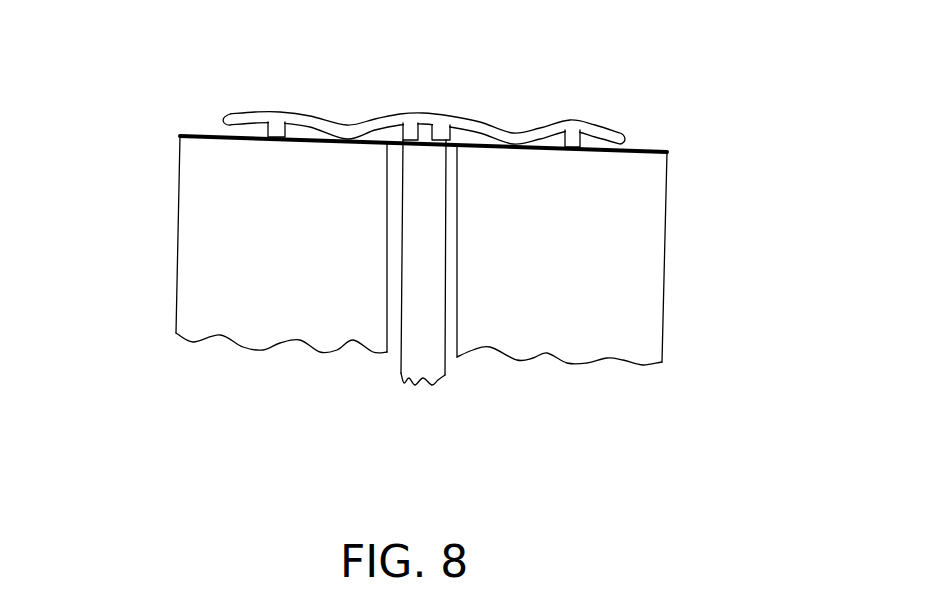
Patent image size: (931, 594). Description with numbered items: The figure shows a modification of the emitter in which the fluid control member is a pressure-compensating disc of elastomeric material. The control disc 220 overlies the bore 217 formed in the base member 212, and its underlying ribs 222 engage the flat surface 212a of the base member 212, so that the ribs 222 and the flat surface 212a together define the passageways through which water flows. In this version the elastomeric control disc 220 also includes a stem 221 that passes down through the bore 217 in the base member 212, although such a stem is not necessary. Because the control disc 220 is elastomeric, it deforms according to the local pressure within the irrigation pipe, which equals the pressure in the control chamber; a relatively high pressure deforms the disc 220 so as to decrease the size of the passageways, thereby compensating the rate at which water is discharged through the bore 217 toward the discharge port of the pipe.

The control disc 220 is at (305, 115).
The ribs 222 is at (272, 138).
The base member 212 is at (615, 257).
The flat surface 212a is at (306, 145).
The stem 221 is at (423, 345).
The bore 217 is at (450, 323).